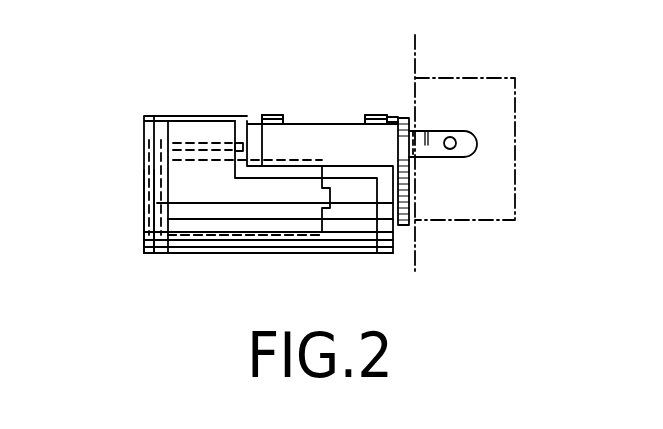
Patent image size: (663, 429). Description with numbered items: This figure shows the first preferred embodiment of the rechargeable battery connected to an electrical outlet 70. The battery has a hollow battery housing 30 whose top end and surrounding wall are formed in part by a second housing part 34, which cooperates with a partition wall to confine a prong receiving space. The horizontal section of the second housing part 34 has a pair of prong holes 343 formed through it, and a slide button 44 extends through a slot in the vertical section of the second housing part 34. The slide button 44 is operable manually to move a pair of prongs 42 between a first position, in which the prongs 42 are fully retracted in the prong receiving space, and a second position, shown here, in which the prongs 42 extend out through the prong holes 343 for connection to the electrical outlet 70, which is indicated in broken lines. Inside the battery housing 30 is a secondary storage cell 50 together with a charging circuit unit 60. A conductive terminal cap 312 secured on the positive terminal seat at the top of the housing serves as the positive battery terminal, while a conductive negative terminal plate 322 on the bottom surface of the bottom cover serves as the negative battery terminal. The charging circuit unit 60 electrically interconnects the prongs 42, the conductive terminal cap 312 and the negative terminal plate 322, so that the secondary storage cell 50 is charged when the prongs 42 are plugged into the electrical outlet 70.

The battery housing 30 is at (163, 109).
The charging circuit unit 60 is at (215, 145).
The second housing part 34 is at (272, 118).
The slide button 44 is at (370, 118).
The prong holes 343 is at (400, 118).
The negative terminal plate 322 is at (142, 173).
The secondary storage cell 50 is at (230, 223).
The conductive terminal cap 312 is at (409, 190).
The prongs 42 is at (435, 130).
The electrical outlet 70 is at (510, 118).